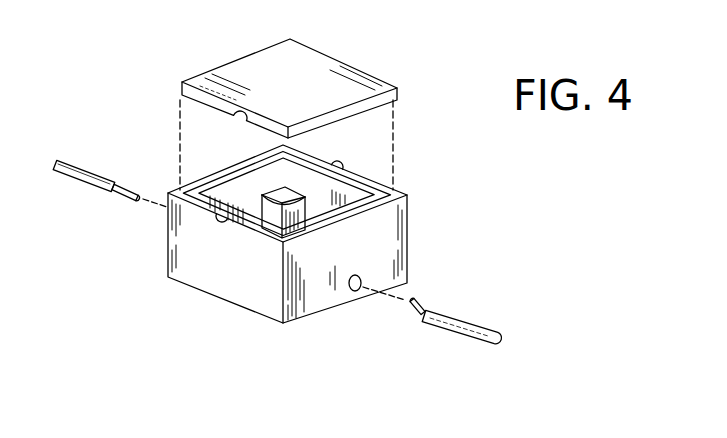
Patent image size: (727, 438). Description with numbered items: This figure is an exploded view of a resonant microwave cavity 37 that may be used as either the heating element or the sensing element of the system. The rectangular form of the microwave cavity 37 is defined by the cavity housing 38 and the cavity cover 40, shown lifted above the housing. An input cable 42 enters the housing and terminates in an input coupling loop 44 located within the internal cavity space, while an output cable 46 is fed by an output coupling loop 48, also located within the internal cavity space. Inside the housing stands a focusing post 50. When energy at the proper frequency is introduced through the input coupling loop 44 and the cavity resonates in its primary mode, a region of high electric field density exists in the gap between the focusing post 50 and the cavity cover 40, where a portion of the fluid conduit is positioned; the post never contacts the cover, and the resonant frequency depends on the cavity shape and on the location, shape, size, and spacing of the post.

The microwave cavity 37 is at (348, 203).
The cavity housing 38 is at (387, 240).
The cavity cover 40 is at (342, 80).
The input cable 42 is at (97, 170).
The input coupling loop 44 is at (133, 200).
The output cable 46 is at (492, 323).
The output coupling loop 48 is at (420, 303).
The focusing post 50 is at (272, 222).